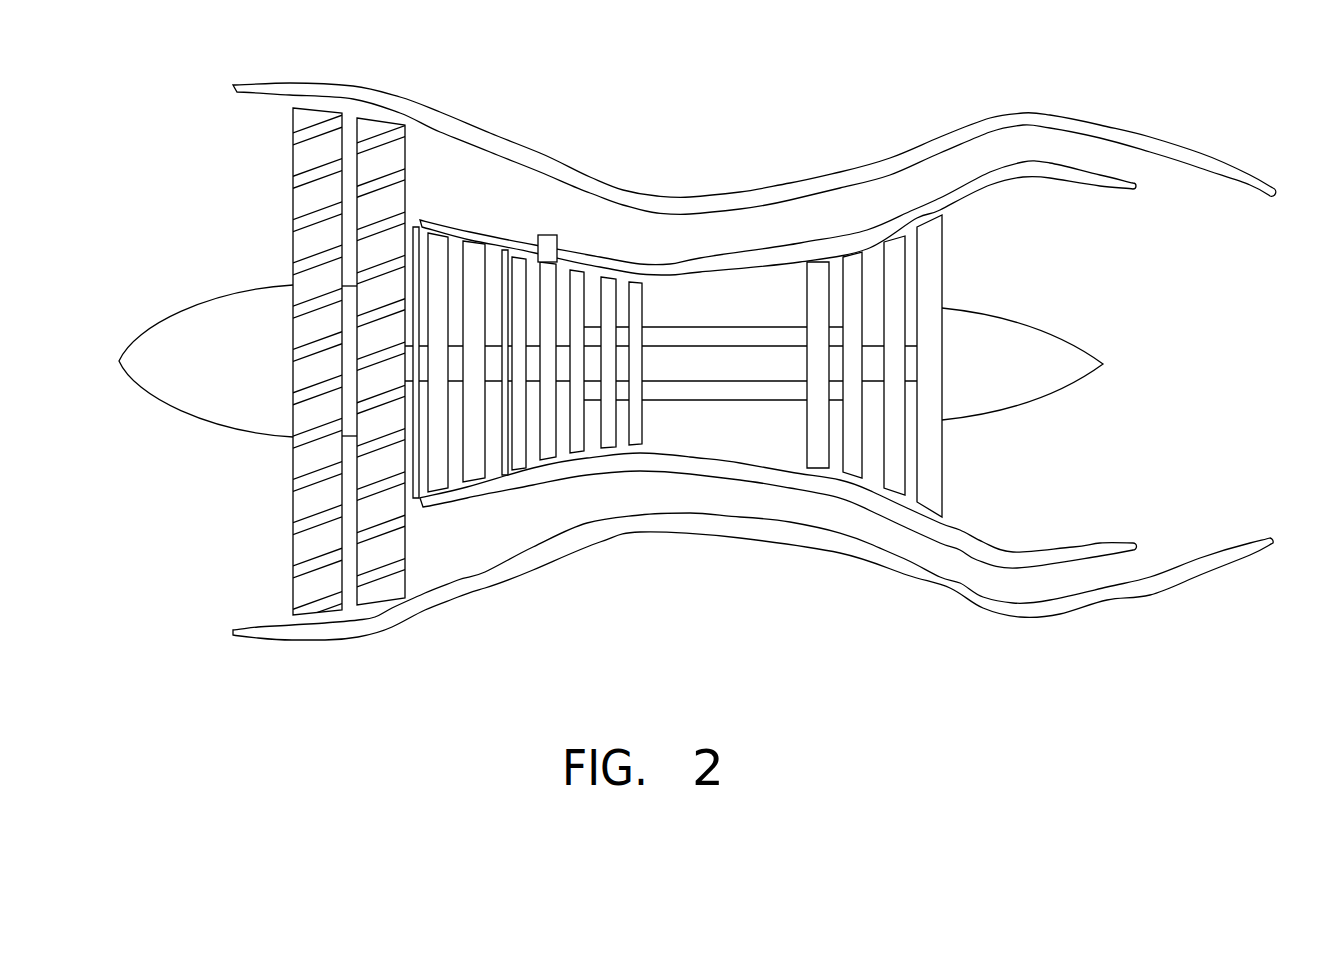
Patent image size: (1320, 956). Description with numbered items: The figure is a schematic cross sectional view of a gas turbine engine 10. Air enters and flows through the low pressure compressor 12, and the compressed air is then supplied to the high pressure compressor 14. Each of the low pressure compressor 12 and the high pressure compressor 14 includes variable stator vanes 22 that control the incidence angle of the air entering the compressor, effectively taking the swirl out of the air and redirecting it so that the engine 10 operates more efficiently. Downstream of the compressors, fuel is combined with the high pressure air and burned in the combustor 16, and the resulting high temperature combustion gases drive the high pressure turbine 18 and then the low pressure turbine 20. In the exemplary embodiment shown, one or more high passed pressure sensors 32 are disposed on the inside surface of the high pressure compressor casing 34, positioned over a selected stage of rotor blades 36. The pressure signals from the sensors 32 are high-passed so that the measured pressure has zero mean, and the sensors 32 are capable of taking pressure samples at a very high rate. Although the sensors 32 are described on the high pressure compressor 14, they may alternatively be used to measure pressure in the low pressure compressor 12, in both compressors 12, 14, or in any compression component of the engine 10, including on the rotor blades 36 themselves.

The gas turbine engine 10 is at (740, 660).
The low pressure compressor 12 is at (455, 248).
The high pressure compressor 14 is at (562, 290).
The combustor 16 is at (743, 285).
The high pressure turbine 18 is at (837, 267).
The low pressure turbine 20 is at (912, 233).
The variable stator vanes 22 is at (504, 250).
The high passed pressure sensors 32 is at (551, 235).
The high pressure compressor casing 34 is at (693, 257).
The rotor blades 36 is at (550, 457).